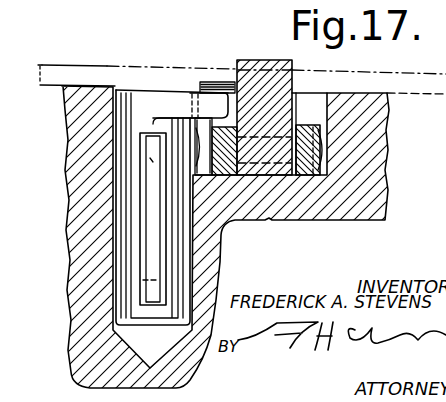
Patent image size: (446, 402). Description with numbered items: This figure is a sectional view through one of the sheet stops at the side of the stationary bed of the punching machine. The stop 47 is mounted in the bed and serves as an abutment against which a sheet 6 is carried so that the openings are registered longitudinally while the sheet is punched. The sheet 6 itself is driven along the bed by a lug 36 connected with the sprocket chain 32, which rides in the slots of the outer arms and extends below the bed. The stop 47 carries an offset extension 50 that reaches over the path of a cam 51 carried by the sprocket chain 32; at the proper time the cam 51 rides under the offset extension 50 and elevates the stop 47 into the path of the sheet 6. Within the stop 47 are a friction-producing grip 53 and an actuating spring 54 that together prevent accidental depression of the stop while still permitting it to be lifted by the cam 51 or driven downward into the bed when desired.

The sheet 6 is at (98, 64).
The sprocket chain 32 is at (308, 125).
The lug 36 is at (268, 60).
The stop 47 is at (127, 213).
The offset extension 50 is at (191, 105).
The cam 51 is at (219, 82).
The friction-producing grip 53 is at (150, 292).
The actuating spring 54 is at (150, 160).